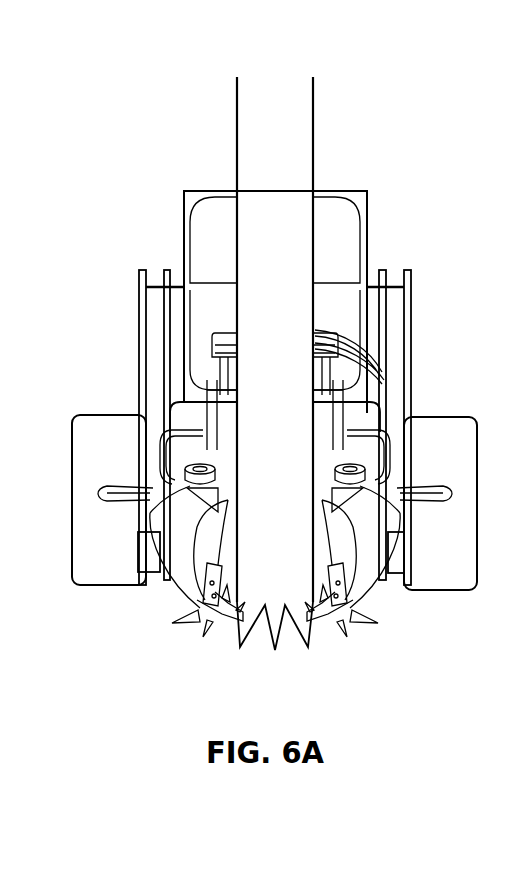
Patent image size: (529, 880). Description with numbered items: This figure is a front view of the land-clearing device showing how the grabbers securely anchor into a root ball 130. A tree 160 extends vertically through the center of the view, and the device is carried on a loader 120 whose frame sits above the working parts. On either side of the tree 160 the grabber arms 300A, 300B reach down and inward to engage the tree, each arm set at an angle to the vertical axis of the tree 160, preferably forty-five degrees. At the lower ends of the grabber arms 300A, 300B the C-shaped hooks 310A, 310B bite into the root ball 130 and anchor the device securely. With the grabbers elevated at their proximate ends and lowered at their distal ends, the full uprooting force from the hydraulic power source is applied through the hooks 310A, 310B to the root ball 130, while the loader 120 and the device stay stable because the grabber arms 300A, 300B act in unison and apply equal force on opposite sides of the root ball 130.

The tree 160 is at (295, 120).
The loader 120 is at (367, 222).
The root ball 130 is at (230, 632).
The grabber arm 300A is at (367, 567).
The grabber arm 300B is at (183, 567).
The C-shaped hook 310A is at (332, 640).
The C-shaped hook 310B is at (200, 637).